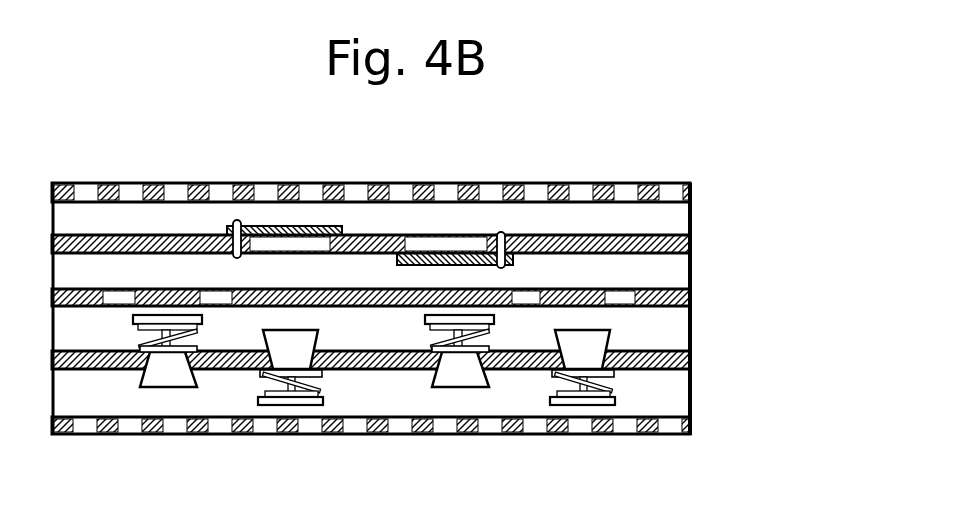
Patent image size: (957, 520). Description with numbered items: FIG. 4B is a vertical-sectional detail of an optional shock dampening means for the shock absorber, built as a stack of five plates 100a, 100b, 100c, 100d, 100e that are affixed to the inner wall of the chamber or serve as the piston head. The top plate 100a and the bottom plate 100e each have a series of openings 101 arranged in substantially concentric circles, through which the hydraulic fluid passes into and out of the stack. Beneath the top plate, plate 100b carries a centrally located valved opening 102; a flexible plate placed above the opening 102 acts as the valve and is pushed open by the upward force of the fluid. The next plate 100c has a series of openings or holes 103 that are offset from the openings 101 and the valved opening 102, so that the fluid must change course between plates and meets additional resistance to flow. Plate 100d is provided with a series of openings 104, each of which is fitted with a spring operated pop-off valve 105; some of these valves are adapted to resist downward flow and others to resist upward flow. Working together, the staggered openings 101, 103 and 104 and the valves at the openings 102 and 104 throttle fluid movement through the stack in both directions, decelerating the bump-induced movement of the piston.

The top plate 100a is at (694, 190).
The plate 100b is at (694, 246).
The plate 100c is at (694, 302).
The plate 100d is at (694, 358).
The bottom plate 100e is at (694, 420).
The openings 101 is at (525, 423).
The valved opening 102 is at (419, 216).
The openings or holes 103 is at (116, 289).
The openings 104 is at (140, 370).
The spring operated pop-off valves 105 is at (284, 343).